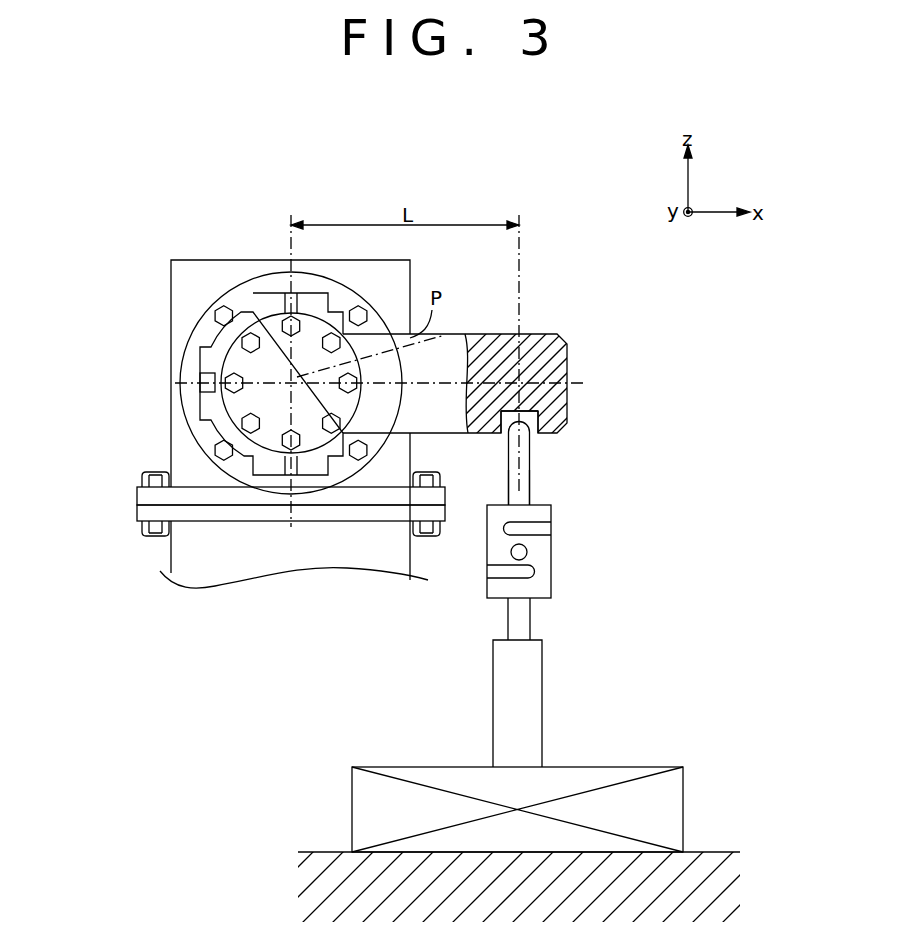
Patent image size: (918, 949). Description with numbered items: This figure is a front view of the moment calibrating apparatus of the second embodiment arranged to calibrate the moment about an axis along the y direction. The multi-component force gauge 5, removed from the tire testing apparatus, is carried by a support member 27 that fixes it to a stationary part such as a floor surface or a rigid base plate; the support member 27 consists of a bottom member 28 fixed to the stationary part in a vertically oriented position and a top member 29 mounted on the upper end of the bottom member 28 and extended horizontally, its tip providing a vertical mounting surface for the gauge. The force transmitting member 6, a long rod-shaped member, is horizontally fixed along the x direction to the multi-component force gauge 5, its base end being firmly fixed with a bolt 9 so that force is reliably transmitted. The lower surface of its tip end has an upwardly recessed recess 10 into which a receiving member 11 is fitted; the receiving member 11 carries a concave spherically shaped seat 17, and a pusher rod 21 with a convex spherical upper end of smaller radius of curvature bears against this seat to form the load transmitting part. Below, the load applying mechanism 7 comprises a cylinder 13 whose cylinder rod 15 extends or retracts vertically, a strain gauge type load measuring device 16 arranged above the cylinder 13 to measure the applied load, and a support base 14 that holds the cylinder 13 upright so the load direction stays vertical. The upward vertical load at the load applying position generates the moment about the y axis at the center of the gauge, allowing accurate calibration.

The multi-component force gauge 5 is at (270, 293).
The bolt 9 is at (199, 372).
The force transmitting member 6 is at (434, 431).
The recess 10 is at (525, 412).
The receiving member 11 is at (540, 423).
The spherically shaped seat 17 is at (527, 442).
The pusher rod 21 is at (508, 485).
The load measuring device 16 is at (541, 578).
The cylinder rod 15 is at (520, 620).
The cylinder 13 is at (535, 670).
The support base 14 is at (360, 812).
The support member 27 is at (242, 504).
The bottom member 28 is at (266, 532).
The top member 29 is at (178, 458).
The load applying mechanism 7 is at (650, 500).